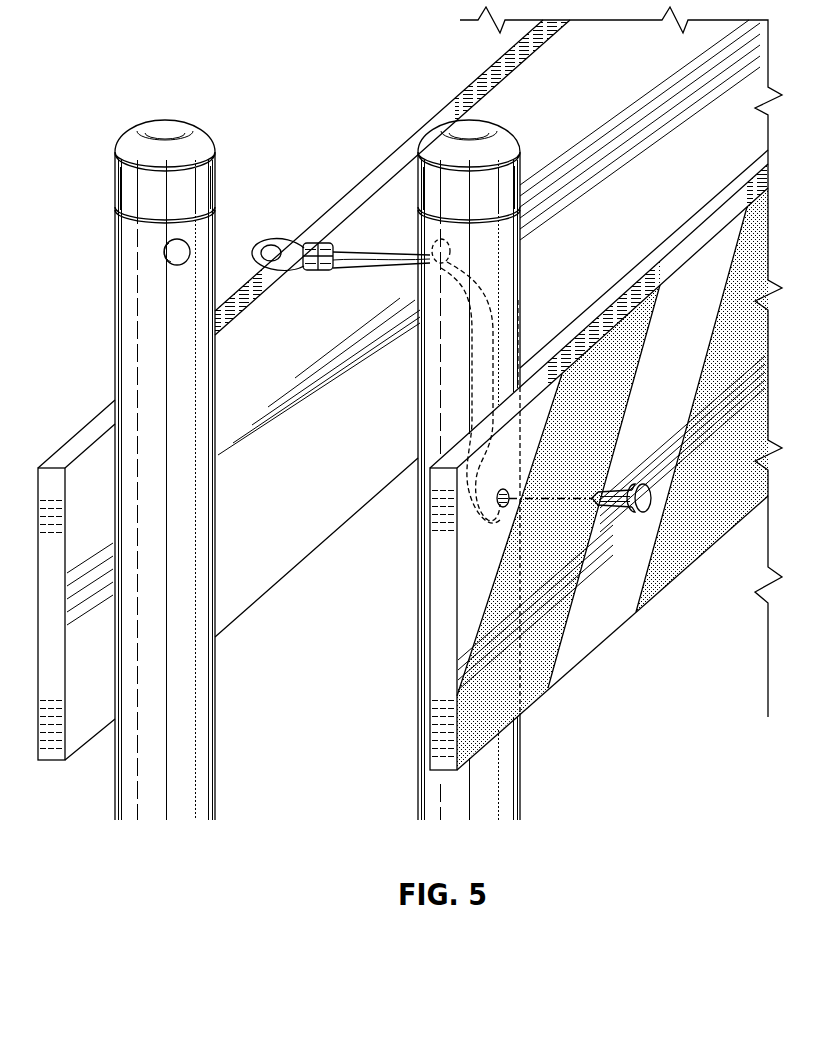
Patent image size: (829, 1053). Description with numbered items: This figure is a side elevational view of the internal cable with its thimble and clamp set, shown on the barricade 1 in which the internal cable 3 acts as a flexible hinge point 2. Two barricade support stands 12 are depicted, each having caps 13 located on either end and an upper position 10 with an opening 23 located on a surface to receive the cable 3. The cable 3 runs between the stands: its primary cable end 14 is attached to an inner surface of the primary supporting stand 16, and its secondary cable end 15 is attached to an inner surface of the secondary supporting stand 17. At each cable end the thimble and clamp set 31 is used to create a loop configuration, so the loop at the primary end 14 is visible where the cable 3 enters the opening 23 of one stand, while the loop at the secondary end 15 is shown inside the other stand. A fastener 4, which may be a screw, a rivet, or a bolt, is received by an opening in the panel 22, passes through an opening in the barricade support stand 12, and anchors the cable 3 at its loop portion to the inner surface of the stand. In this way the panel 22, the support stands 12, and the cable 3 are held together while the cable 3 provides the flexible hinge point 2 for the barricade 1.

The barricade 1 is at (410, 413).
The flexible hinge point 2 is at (407, 342).
The internal cable 3 is at (358, 252).
The fastener 4 is at (642, 485).
The upper position 10 is at (320, 459).
The barricade support stand 12 is at (130, 360).
The caps 13 is at (210, 182).
The primary cable end 14 is at (350, 250).
The secondary cable end 15 is at (488, 515).
The primary supporting stand 16 is at (128, 480).
The secondary supporting stand 17 is at (522, 738).
The panel 22 is at (403, 395).
The opening 23 is at (192, 252).
The thimble and clamp set 31 is at (312, 240).